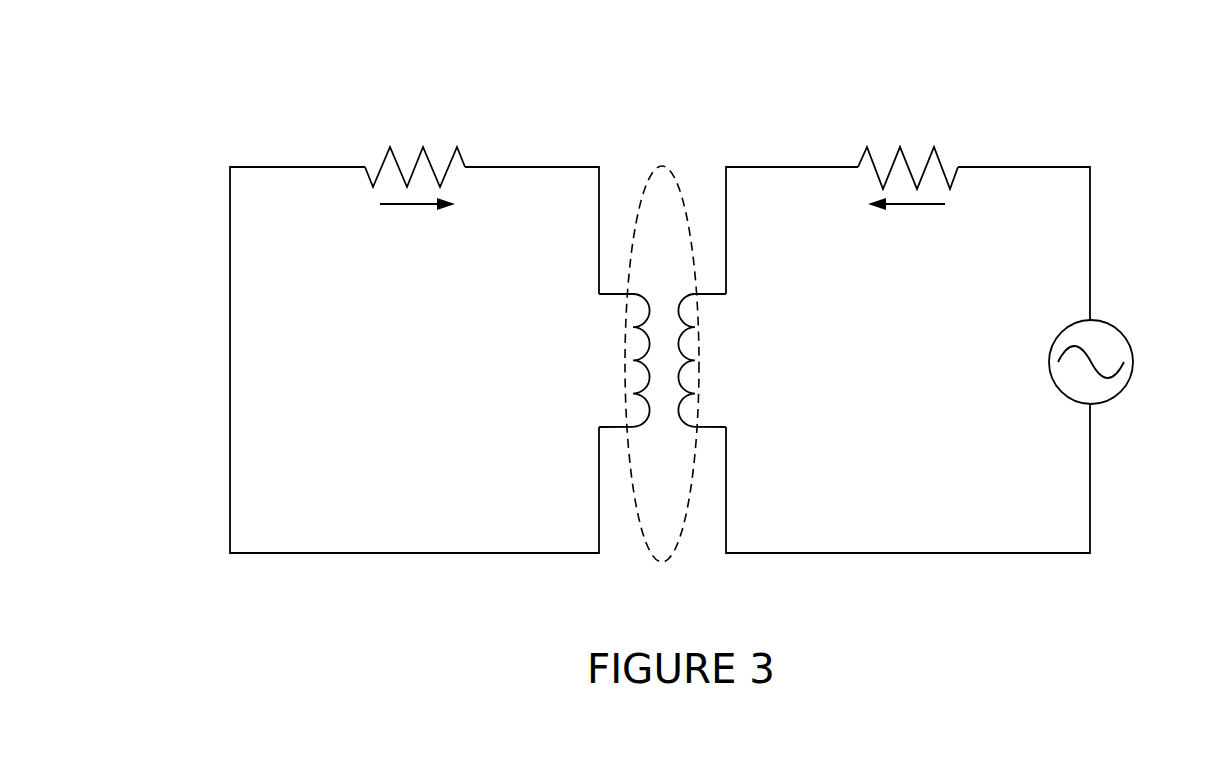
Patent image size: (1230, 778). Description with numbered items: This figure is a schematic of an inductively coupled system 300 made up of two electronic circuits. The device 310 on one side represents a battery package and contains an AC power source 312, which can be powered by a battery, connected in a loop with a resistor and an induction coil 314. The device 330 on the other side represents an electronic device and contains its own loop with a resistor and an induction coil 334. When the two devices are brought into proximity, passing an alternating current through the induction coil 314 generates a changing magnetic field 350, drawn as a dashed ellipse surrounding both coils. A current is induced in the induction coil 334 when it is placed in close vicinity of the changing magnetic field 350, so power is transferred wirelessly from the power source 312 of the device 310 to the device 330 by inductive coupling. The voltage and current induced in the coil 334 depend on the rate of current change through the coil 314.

The inductively coupled system 300 is at (640, 69).
The device 310 is at (1022, 127).
The AC power source 312 is at (1115, 328).
The induction coil 314 is at (706, 295).
The device 330 is at (264, 127).
The induction coil 334 is at (618, 295).
The changing magnetic field 350 is at (668, 172).